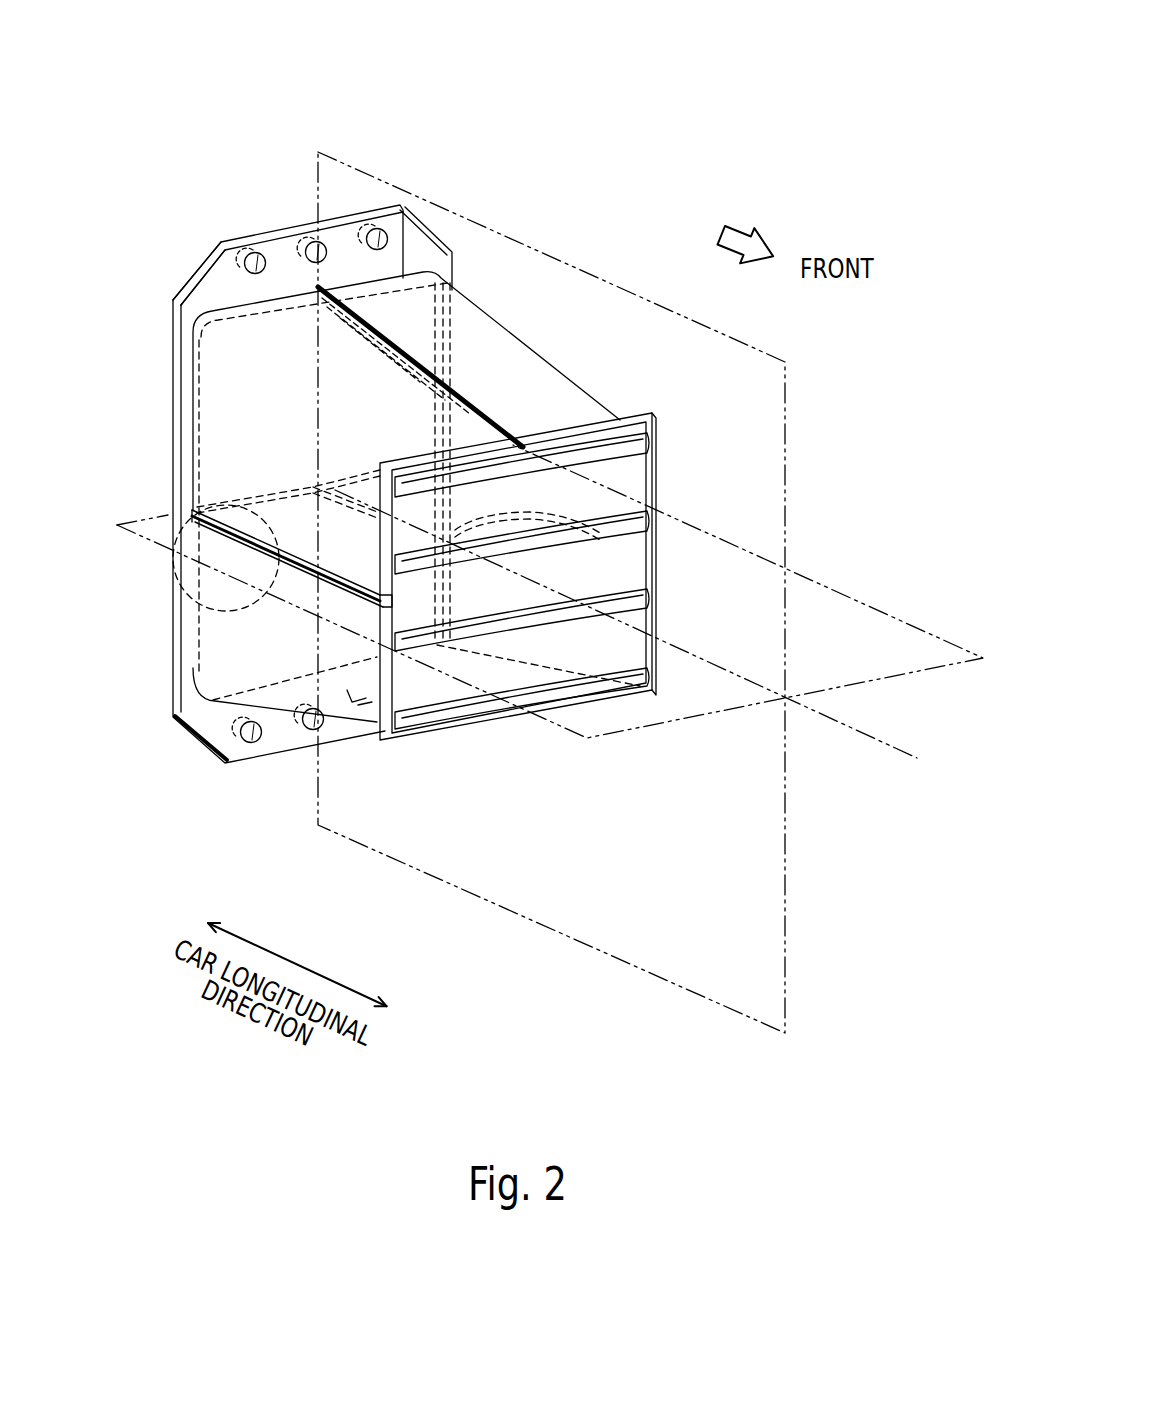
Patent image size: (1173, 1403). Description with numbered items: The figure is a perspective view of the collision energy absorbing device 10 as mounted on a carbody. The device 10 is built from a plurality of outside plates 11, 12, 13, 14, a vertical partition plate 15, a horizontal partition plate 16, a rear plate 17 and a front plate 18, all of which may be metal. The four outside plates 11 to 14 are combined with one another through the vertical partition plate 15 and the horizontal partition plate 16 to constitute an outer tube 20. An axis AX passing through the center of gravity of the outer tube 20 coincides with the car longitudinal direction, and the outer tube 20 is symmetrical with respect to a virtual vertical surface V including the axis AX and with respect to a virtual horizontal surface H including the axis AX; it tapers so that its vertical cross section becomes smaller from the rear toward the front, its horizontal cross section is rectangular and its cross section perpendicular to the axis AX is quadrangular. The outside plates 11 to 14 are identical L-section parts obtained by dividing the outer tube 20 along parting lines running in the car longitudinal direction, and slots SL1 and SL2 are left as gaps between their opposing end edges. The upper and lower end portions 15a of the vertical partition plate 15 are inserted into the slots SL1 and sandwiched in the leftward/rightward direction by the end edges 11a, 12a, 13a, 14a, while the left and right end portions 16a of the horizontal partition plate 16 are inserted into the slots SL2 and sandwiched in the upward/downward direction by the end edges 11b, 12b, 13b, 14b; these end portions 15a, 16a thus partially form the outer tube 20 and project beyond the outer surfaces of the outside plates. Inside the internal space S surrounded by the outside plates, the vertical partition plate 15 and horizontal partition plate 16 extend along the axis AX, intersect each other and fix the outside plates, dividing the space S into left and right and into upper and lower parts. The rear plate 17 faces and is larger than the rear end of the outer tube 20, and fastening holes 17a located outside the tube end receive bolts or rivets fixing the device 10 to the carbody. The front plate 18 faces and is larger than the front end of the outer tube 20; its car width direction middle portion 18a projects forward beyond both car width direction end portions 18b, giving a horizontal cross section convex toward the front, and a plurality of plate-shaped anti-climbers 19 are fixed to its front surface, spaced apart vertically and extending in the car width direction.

The collision energy absorbing device 10 is at (549, 138).
The outside plate 11 is at (218, 362).
The end edge 11a is at (404, 340).
The end edge 11b is at (280, 537).
The outside plate 12 is at (482, 303).
The end edge 12a is at (482, 403).
The end edge 12b is at (663, 490).
The outside plate 13 is at (213, 638).
The end edge 13a is at (343, 700).
The end edge 13b is at (180, 613).
The outside plate 14 is at (661, 574).
The end edge 14a is at (440, 660).
The end edge 14b is at (660, 527).
The vertical partition plate 15 is at (373, 328).
The end portion 15a is at (383, 357).
The horizontal partition plate 16 is at (237, 530).
The end portion 16a is at (255, 550).
The rear plate 17 is at (193, 270).
The fastening hole 17a is at (250, 253).
The front plate 18 is at (648, 410).
The car width direction middle portion 18a is at (543, 673).
The car width direction end portion 18b is at (657, 648).
The anti-climber 19 is at (653, 472).
The outer tube 20 is at (540, 354).
The slot SL1 is at (318, 286).
The slot SL2 is at (247, 537).
The internal space S is at (553, 407).
The virtual horizontal surface H is at (893, 615).
The virtual vertical surface V is at (677, 985).
The axis AX is at (873, 738).